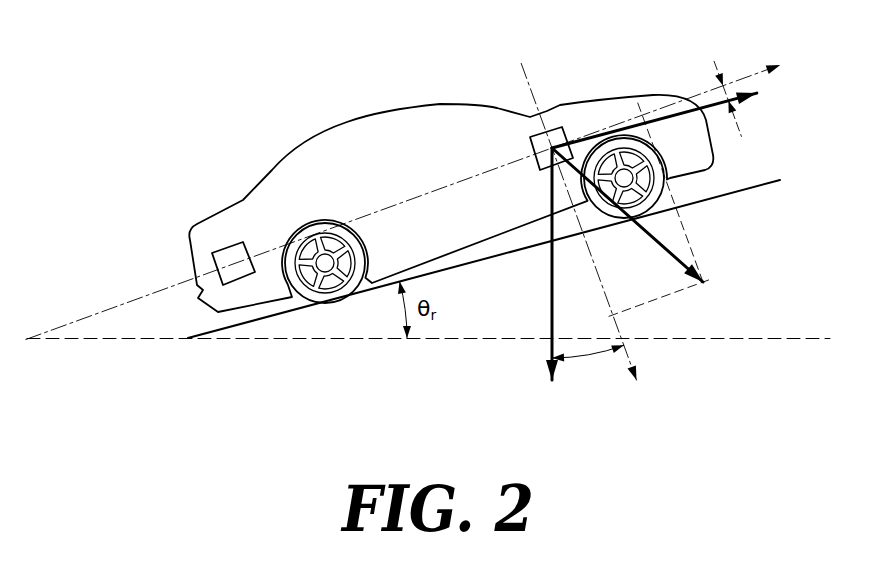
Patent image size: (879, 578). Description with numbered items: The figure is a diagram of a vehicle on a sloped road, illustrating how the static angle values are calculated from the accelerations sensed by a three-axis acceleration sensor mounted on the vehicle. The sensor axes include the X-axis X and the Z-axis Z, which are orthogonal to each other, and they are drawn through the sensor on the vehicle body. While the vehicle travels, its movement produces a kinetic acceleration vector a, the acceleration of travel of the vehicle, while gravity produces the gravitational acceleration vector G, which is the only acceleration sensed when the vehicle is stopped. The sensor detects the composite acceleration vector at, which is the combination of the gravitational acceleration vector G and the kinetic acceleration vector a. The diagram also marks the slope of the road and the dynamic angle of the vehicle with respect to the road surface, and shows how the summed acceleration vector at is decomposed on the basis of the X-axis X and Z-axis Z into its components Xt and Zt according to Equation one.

The X-axis X is at (412, 196).
The Z-axis Z is at (574, 206).
The kinetic acceleration vector a is at (581, 113).
The X-axis component of summed acceleration Xt is at (682, 83).
The composite acceleration vector at is at (724, 269).
The Z-axis component of summed acceleration Zt is at (659, 297).
The gravitational acceleration vector G is at (535, 349).